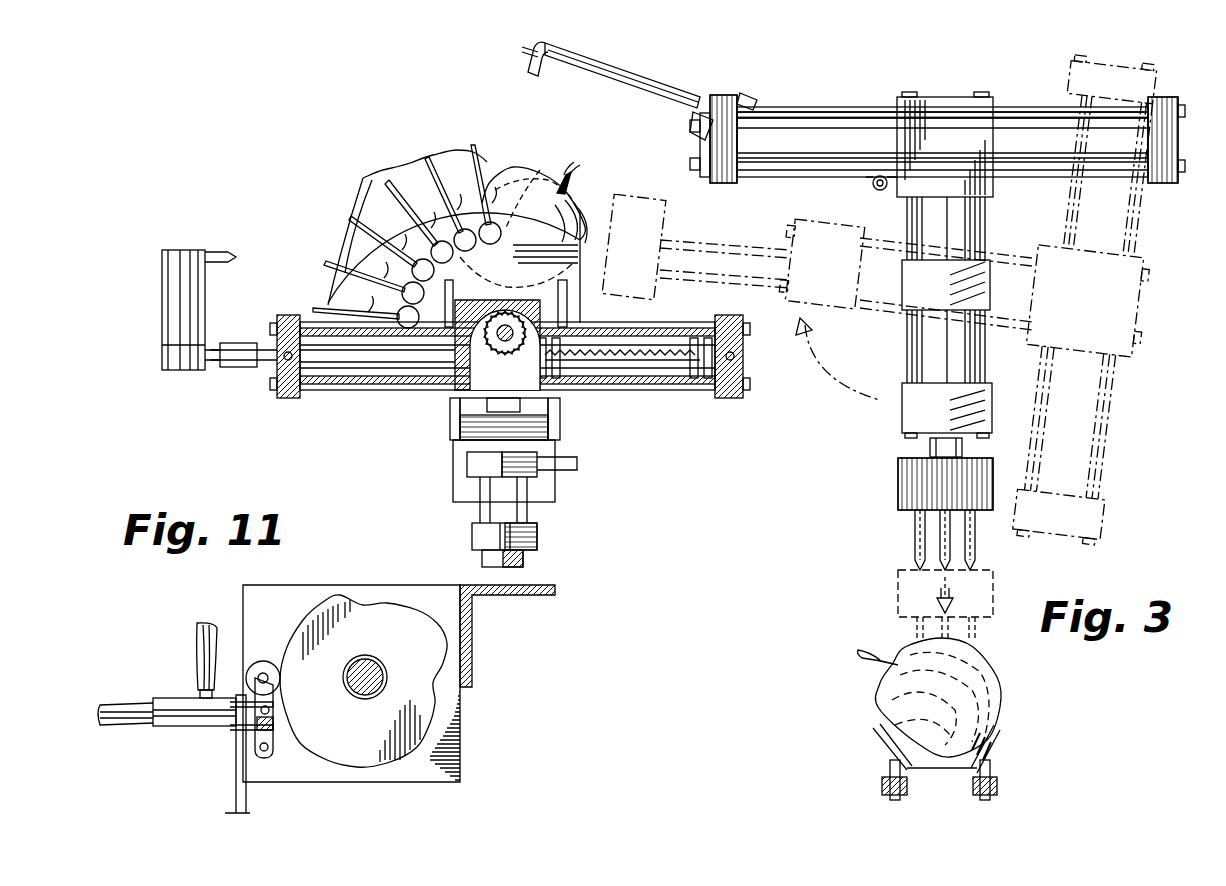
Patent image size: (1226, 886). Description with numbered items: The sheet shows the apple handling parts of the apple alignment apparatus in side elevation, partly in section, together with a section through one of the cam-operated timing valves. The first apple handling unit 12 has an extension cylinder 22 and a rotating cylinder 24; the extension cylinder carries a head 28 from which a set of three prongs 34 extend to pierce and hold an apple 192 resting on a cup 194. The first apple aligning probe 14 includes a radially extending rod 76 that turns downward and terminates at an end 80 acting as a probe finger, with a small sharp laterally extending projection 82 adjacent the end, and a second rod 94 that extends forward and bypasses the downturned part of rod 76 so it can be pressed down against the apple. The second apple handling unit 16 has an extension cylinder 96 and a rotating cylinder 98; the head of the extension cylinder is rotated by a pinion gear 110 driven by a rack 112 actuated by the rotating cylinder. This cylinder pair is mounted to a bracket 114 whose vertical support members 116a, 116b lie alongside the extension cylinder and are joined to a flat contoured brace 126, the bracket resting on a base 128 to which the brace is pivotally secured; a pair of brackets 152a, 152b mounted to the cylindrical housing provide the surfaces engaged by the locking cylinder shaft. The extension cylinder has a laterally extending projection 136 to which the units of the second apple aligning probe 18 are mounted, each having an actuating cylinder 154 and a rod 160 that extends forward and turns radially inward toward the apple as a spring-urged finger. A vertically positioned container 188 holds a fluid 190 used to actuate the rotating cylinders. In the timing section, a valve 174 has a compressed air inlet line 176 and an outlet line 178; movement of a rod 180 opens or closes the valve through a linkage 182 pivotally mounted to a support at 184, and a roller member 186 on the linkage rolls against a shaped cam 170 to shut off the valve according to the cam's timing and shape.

In FIG. 3, the first apple handling unit 12 is at (955, 82).
In FIG. 3, the first apple aligning probe 14 is at (730, 66).
In FIG. 3, the second apple handling unit 16 is at (362, 488).
In FIG. 3, the second apple aligning probe 18 is at (325, 226).
In FIG. 3, the extension cylinder 22 is at (1000, 207).
In FIG. 3, the rotating cylinder 24 is at (860, 108).
In FIG. 3, the head 28 is at (896, 481).
In FIG. 3, the prongs 34 is at (968, 535).
In FIG. 3, the radially extending rod 76 is at (655, 90).
In FIG. 3, the end of rod 80 is at (533, 72).
In FIG. 3, the small sharp laterally extending projection 82 is at (528, 58).
In FIG. 3, the second rod 94 is at (690, 108).
In FIG. 3, the extension cylinder 96 is at (578, 303).
In FIG. 3, the rotating cylinder 98 is at (676, 400).
In FIG. 3, the pinion gear 110 is at (480, 340).
In FIG. 3, the rack 112 is at (650, 348).
In FIG. 3, the bracket 114 is at (570, 436).
In FIG. 3, the vertical support member 116a is at (450, 420).
In FIG. 3, the vertical support member 116b is at (560, 405).
In FIG. 3, the flat contoured brace 126 is at (452, 448).
In FIG. 3, the base 128 is at (540, 540).
In FIG. 3, the laterally extending projection 136 is at (585, 195).
In FIG. 3, the bracket 152a is at (470, 460).
In FIG. 3, the bracket 152b is at (535, 470).
In FIG. 3, the actuating cylinder 154 is at (503, 178).
In FIG. 3, the rod 160 is at (366, 170).
In FIG. 11, the shaped cams 170 is at (345, 593).
In FIG. 11, the valve 174 is at (195, 730).
In FIG. 11, the compressed air inlet line 176 is at (120, 700).
In FIG. 11, the outlet line 178 is at (195, 634).
In FIG. 11, the rod 180 is at (240, 695).
In FIG. 11, the linkage 182 is at (275, 740).
In FIG. 11, the pivot support 184 is at (258, 758).
In FIG. 11, the roller member 186 is at (265, 661).
In FIG. 3, the vertically positioned container 188 is at (162, 257).
In FIG. 3, the fluid 190 is at (180, 316).
In FIG. 3, the apple 192 is at (548, 175).
In FIG. 3, the cup 194 is at (993, 738).